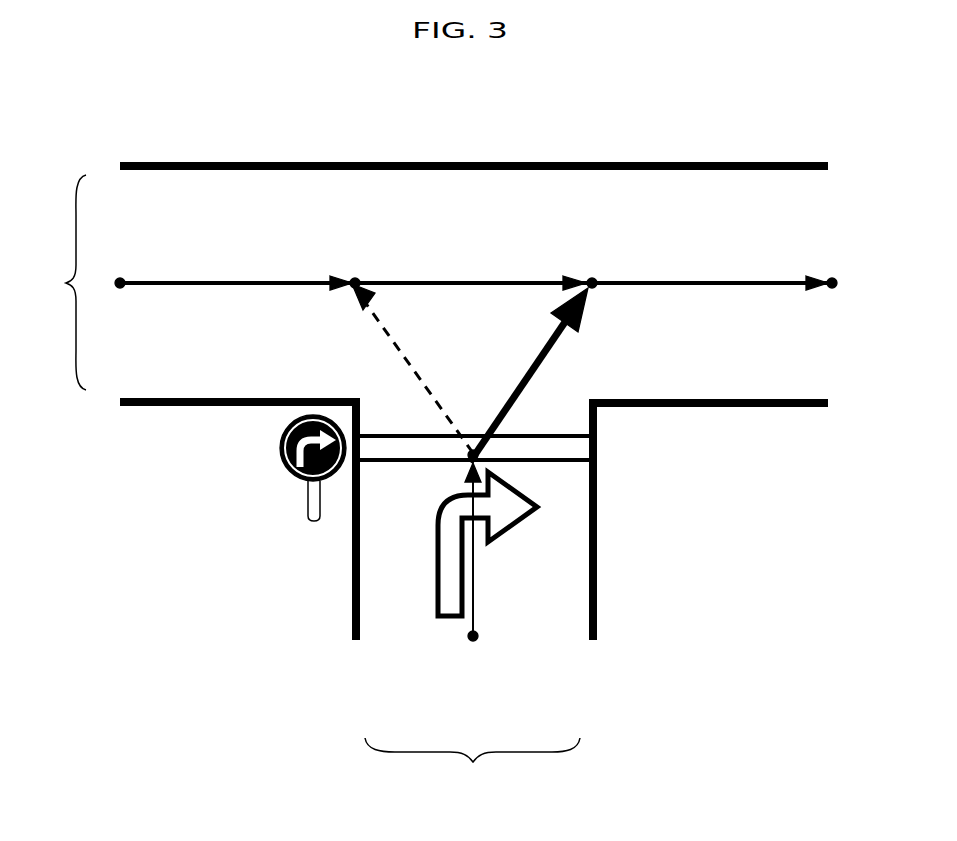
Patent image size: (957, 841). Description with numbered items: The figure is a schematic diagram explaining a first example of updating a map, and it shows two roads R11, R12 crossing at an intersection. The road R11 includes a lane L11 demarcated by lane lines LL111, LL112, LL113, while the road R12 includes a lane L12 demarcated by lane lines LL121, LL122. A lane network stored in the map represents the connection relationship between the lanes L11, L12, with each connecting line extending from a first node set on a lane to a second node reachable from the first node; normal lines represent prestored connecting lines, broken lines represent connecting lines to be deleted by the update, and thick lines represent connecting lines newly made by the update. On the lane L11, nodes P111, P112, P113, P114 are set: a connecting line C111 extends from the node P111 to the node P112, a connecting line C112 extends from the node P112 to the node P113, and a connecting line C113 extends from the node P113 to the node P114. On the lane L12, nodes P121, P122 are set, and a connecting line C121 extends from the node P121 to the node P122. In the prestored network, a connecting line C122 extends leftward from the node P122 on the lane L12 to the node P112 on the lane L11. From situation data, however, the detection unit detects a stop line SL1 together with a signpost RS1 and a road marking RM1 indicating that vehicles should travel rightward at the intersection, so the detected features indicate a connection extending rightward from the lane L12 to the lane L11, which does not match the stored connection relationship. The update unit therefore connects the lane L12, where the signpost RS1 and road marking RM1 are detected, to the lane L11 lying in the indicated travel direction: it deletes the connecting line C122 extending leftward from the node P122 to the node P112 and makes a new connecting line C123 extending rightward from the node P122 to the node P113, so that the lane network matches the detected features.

The road R11 is at (47, 282).
The road R12 is at (472, 772).
The lane L11 is at (722, 183).
The lane L12 is at (577, 543).
The lane line LL111 is at (245, 162).
The lane line LL112 is at (200, 406).
The lane line LL113 is at (800, 406).
The lane line LL121 is at (354, 582).
The lane line LL122 is at (598, 580).
The node P111 is at (121, 282).
The node P112 is at (358, 282).
The node P113 is at (597, 282).
The node P114 is at (834, 282).
The node P121 is at (473, 640).
The node P122 is at (473, 450).
The connecting line C111 is at (205, 282).
The connecting line C112 is at (453, 282).
The connecting line C113 is at (677, 282).
The connecting line C121 is at (474, 612).
The connecting line C122 is at (393, 345).
The connecting line C123 is at (550, 352).
The stop line SL1 is at (514, 434).
The road marking RM1 is at (447, 500).
The signpost RS1 is at (282, 447).